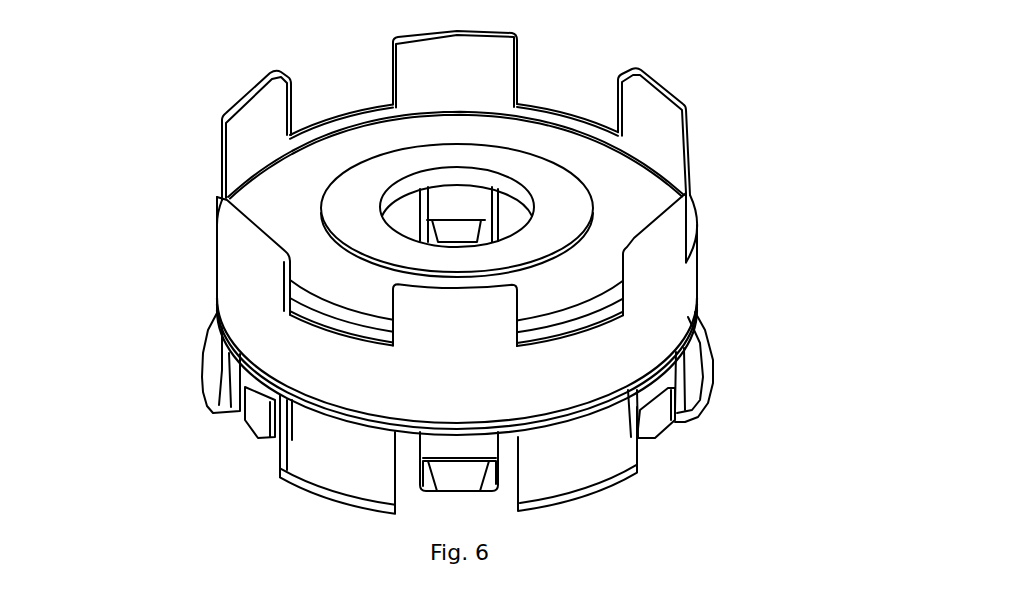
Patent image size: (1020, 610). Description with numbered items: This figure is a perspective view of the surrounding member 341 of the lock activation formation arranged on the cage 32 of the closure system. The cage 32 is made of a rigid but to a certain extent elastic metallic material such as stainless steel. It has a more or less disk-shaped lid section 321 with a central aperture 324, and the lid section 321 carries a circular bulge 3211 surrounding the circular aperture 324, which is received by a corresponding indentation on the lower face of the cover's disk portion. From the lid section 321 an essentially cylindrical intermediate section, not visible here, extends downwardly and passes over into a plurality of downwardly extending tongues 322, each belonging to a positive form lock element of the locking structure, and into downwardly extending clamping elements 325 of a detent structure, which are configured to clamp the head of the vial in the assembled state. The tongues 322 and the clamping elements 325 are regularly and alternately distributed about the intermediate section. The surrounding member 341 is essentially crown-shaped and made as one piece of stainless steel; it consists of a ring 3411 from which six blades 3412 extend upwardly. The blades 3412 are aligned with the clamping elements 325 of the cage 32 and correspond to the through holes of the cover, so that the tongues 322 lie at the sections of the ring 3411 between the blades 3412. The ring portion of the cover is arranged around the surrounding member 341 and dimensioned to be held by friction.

The cage 32 is at (488, 96).
The lid section 321 is at (620, 207).
The circular bulge 3211 is at (360, 196).
The central aperture 324 is at (432, 177).
The surrounding member 341 is at (183, 188).
The ring 3411 is at (687, 297).
The blades 3412 is at (252, 249).
The tongue 322 is at (703, 372).
The clamping elements 325 is at (253, 425).